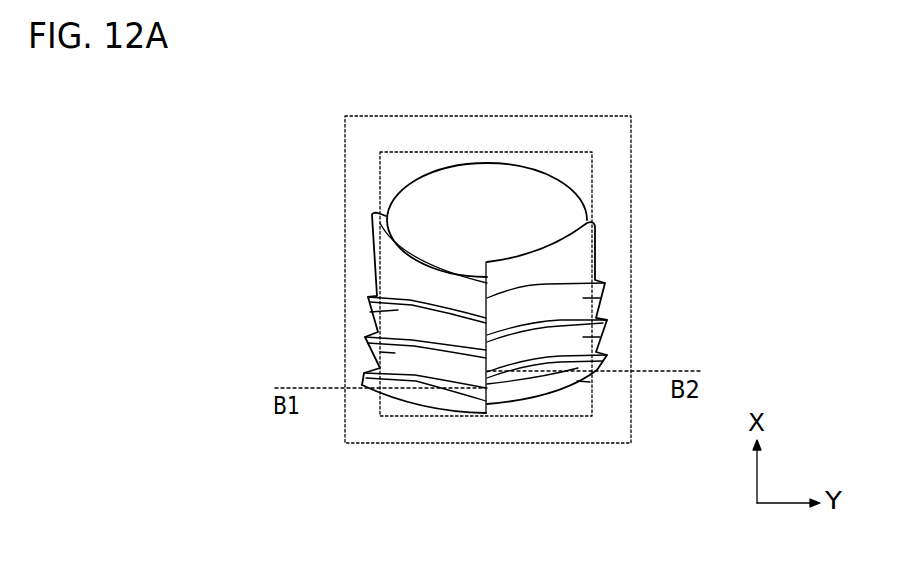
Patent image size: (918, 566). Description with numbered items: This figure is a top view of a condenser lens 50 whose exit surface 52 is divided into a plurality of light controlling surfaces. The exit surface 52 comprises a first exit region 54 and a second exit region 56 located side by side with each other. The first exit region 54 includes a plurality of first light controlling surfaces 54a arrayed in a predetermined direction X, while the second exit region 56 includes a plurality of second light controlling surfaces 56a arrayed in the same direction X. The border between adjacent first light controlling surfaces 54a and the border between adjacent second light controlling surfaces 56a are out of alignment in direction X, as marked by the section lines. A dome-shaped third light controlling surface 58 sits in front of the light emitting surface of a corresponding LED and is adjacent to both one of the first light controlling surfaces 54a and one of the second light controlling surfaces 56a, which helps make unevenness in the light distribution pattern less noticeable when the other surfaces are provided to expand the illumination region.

The condenser lens 50 is at (503, 542).
The exit surface 52 is at (400, 278).
The first exit region 54 is at (366, 367).
The first light controlling surfaces 54a is at (383, 272).
The second exit region 56 is at (602, 348).
The second light controlling surfaces 56a is at (583, 253).
The third light controlling surface 58 is at (497, 192).